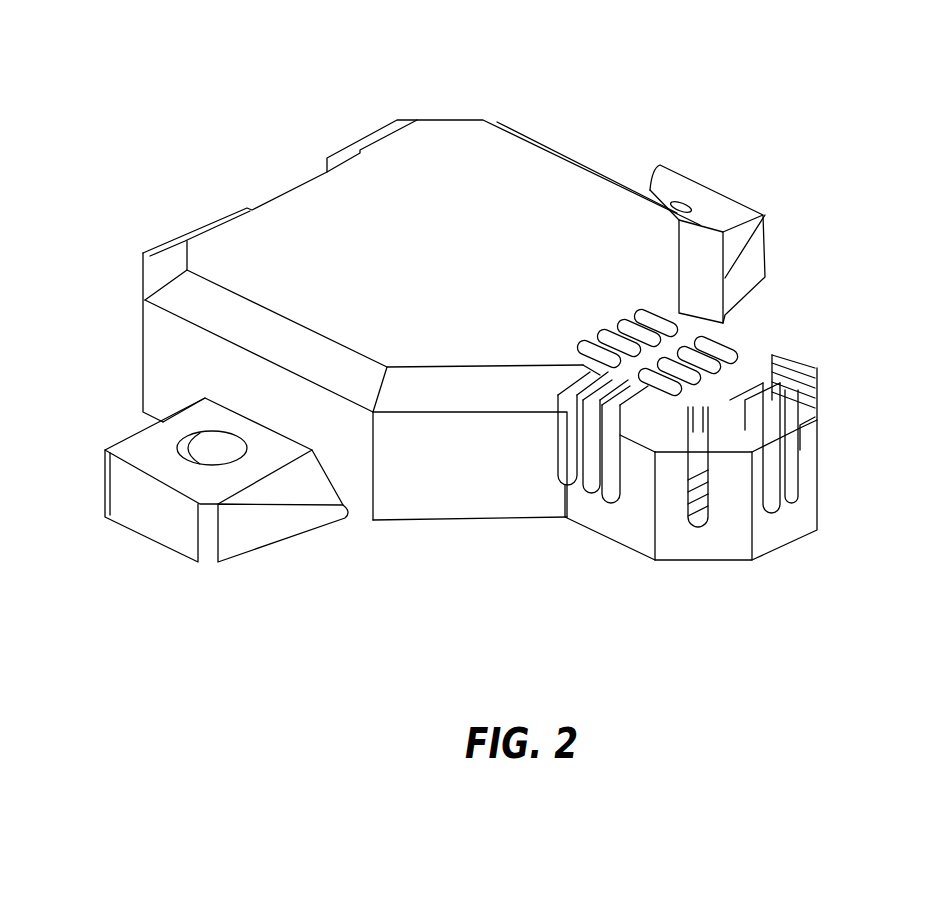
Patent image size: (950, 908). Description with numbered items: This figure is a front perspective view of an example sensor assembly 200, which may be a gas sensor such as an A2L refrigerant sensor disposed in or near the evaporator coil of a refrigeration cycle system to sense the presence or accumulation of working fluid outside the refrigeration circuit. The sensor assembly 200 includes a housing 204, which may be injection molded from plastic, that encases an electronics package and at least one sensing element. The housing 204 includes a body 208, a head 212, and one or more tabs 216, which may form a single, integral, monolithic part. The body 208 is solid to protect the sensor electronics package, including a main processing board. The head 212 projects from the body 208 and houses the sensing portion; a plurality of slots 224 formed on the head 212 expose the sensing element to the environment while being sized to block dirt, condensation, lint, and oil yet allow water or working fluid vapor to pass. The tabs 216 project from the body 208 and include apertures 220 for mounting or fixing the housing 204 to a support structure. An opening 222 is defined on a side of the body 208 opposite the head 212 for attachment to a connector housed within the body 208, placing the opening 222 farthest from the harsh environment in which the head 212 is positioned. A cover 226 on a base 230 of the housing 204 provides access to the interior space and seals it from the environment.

The sensor assembly 200 is at (450, 304).
The housing 204 is at (421, 351).
The body 208 is at (548, 162).
The head 212 is at (705, 447).
The tab 216 is at (421, 375).
The aperture 220 is at (180, 448).
The opening 222 is at (283, 192).
The slot 224 is at (612, 505).
The cover 226 is at (410, 522).
The base 230 is at (508, 528).